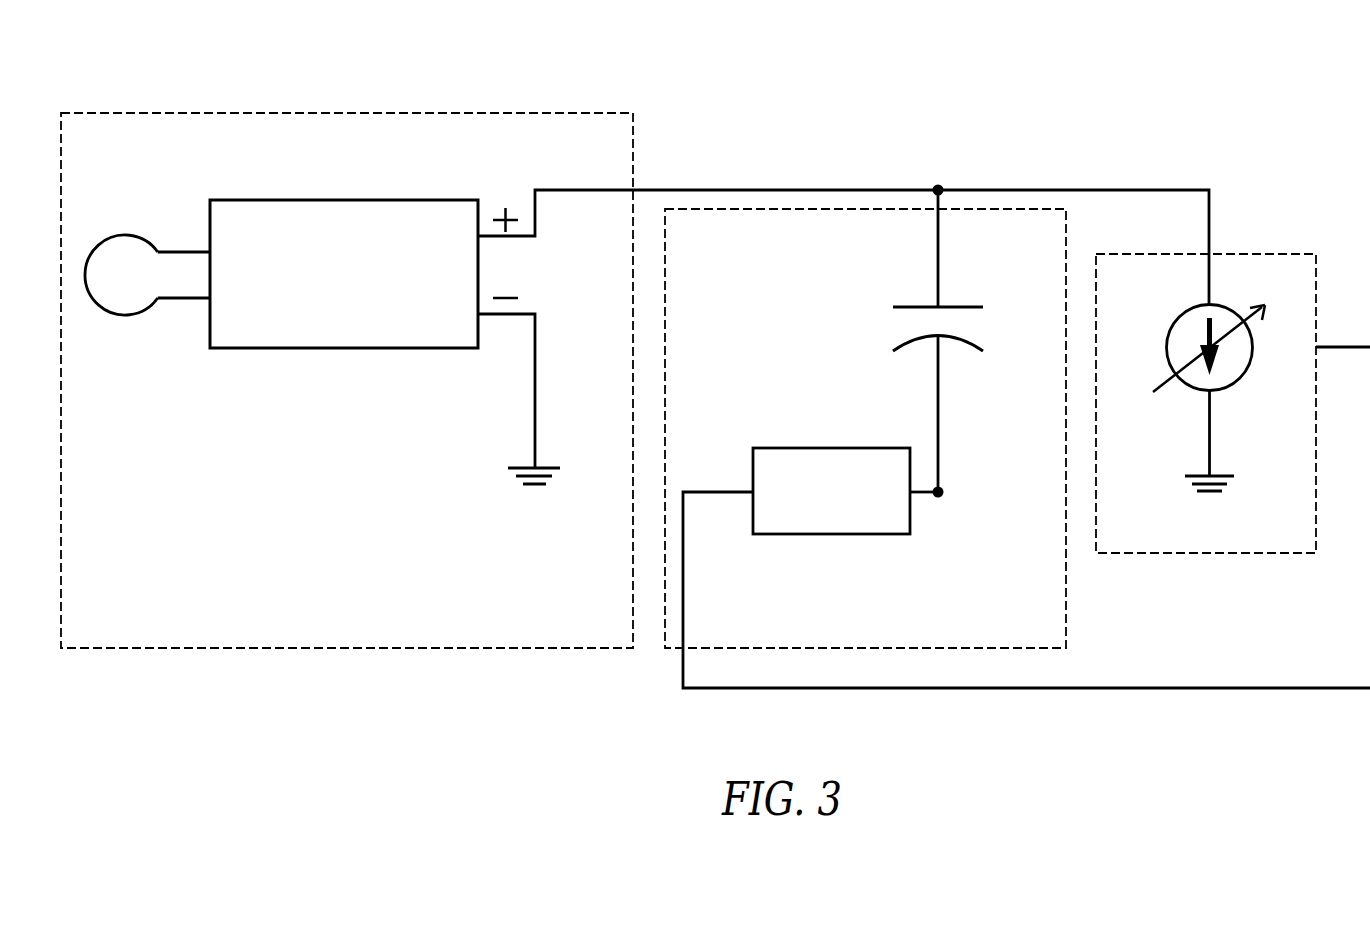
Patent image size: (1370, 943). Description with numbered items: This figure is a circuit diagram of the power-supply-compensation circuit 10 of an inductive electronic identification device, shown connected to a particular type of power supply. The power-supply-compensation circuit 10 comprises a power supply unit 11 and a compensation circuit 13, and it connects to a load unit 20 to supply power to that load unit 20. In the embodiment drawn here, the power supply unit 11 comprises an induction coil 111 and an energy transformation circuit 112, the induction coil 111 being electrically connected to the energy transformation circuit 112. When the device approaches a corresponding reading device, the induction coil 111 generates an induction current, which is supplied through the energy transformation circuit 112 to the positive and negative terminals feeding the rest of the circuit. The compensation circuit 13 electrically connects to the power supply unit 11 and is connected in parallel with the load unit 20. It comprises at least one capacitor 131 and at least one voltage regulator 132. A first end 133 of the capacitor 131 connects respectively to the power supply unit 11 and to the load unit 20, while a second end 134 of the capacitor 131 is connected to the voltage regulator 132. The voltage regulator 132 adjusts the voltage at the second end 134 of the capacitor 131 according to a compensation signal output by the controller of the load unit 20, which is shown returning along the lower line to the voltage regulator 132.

The power-supply-compensation circuit 10 is at (746, 186).
The power supply unit 11 is at (498, 105).
The induction coil 111 is at (118, 233).
The energy transformation circuit 112 is at (430, 350).
The compensation circuit 13 is at (737, 653).
The capacitor 131 is at (963, 303).
The voltage regulator 132 is at (806, 447).
The first end of the capacitor 133 is at (938, 186).
The second end of the capacitor 134 is at (946, 492).
The load unit 20 is at (1275, 242).